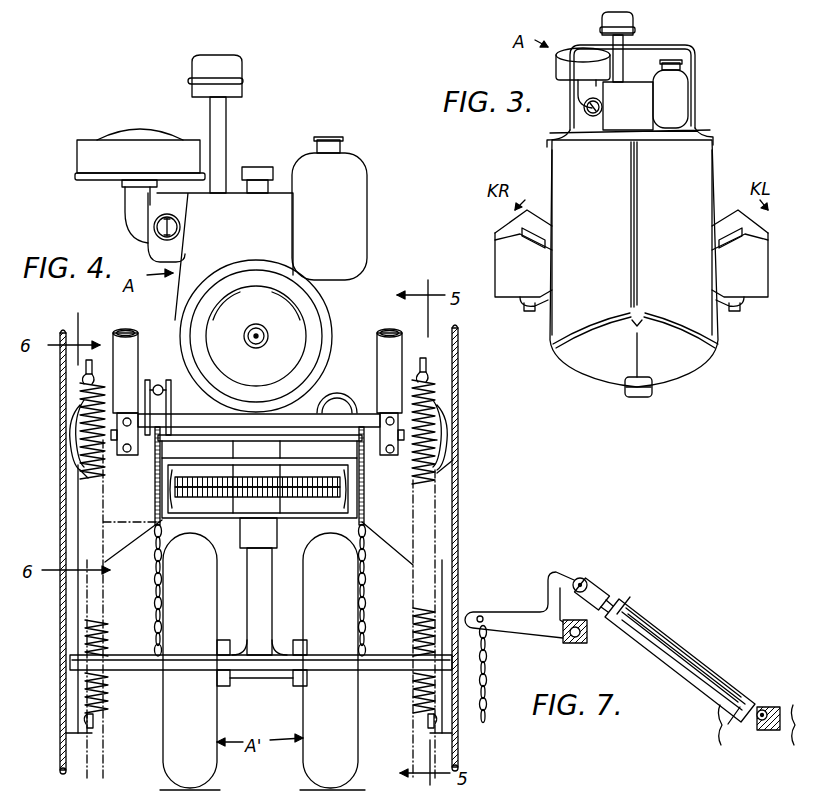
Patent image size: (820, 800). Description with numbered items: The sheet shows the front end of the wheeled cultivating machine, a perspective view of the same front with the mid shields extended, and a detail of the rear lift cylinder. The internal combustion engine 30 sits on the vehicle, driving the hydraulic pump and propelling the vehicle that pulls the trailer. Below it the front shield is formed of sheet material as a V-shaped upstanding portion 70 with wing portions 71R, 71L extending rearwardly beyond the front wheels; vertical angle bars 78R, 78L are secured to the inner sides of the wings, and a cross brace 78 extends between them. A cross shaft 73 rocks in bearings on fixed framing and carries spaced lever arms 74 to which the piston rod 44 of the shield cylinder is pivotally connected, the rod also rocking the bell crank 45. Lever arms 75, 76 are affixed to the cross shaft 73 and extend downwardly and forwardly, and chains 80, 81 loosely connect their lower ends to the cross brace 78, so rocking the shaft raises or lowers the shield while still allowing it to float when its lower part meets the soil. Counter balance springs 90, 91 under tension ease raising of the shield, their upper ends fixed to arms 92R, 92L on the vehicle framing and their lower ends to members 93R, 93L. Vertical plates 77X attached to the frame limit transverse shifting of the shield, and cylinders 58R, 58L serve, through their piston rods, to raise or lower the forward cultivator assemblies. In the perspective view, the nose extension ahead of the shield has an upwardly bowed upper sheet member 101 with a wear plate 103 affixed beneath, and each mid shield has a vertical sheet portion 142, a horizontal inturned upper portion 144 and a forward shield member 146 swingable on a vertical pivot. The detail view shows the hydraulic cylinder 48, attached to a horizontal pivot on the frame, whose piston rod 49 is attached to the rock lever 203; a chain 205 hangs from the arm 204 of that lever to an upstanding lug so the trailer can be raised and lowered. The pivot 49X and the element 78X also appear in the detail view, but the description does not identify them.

In FIG. 4, the internal combustion engine 30 is at (262, 242).
In FIG. 3, the internal combustion engine 30 is at (636, 114).
In FIG. 3, the V-shaped upstanding portion 70 is at (606, 199).
In FIG. 4, the wing portion 71R is at (91, 555).
In FIG. 3, the wing portion 71R is at (552, 155).
In FIG. 4, the wing portion 71L is at (458, 495).
In FIG. 3, the wing portion 71L is at (712, 170).
In FIG. 3, the inturned upper portion 144 is at (520, 213).
In FIG. 3, the shield member 146 is at (533, 272).
In FIG. 3, the vertical sheet portion 142 is at (496, 258).
In FIG. 3, the upper sheet member 101 is at (612, 357).
In FIG. 3, the wear plate 103 is at (652, 391).
In FIG. 4, the cylinder 58R is at (146, 332).
In FIG. 4, the cylinder 58L is at (376, 340).
In FIG. 4, the piston rod 44 is at (158, 385).
In FIG. 4, the lever arms 74 is at (178, 402).
In FIG. 4, the cross shaft 73 is at (243, 432).
In FIG. 4, the bell crank 45 is at (165, 420).
In FIG. 4, the arm 92R is at (86, 375).
In FIG. 4, the arm 92L is at (428, 368).
In FIG. 4, the vertical plates 77X is at (72, 425).
In FIG. 4, the counter balance spring 91 is at (437, 440).
In FIG. 4, the counter balance spring 90 is at (85, 470).
In FIG. 4, the lever arm 75 is at (158, 500).
In FIG. 4, the lever arm 76 is at (364, 485).
In FIG. 4, the chain 80 is at (155, 605).
In FIG. 4, the chain 81 is at (364, 612).
In FIG. 4, the cross brace 78 is at (199, 667).
In FIG. 4, the vertical angle bar 78R is at (76, 628).
In FIG. 4, the vertical angle bar 78L is at (456, 553).
In FIG. 4, the member 93R is at (89, 735).
In FIG. 4, the member 93L is at (428, 722).
In FIG. 7, the rock lever 203 is at (531, 610).
In FIG. 7, the arm 204 is at (510, 622).
In FIG. 7, the chain 205 is at (486, 700).
In FIG. 7, the pivot pin 49X is at (583, 580).
In FIG. 7, the piston rod 49 is at (621, 592).
In FIG. 7, the cylinder 48 is at (742, 655).
In FIG. 7, the cylinder mounting bracket 78X is at (757, 724).